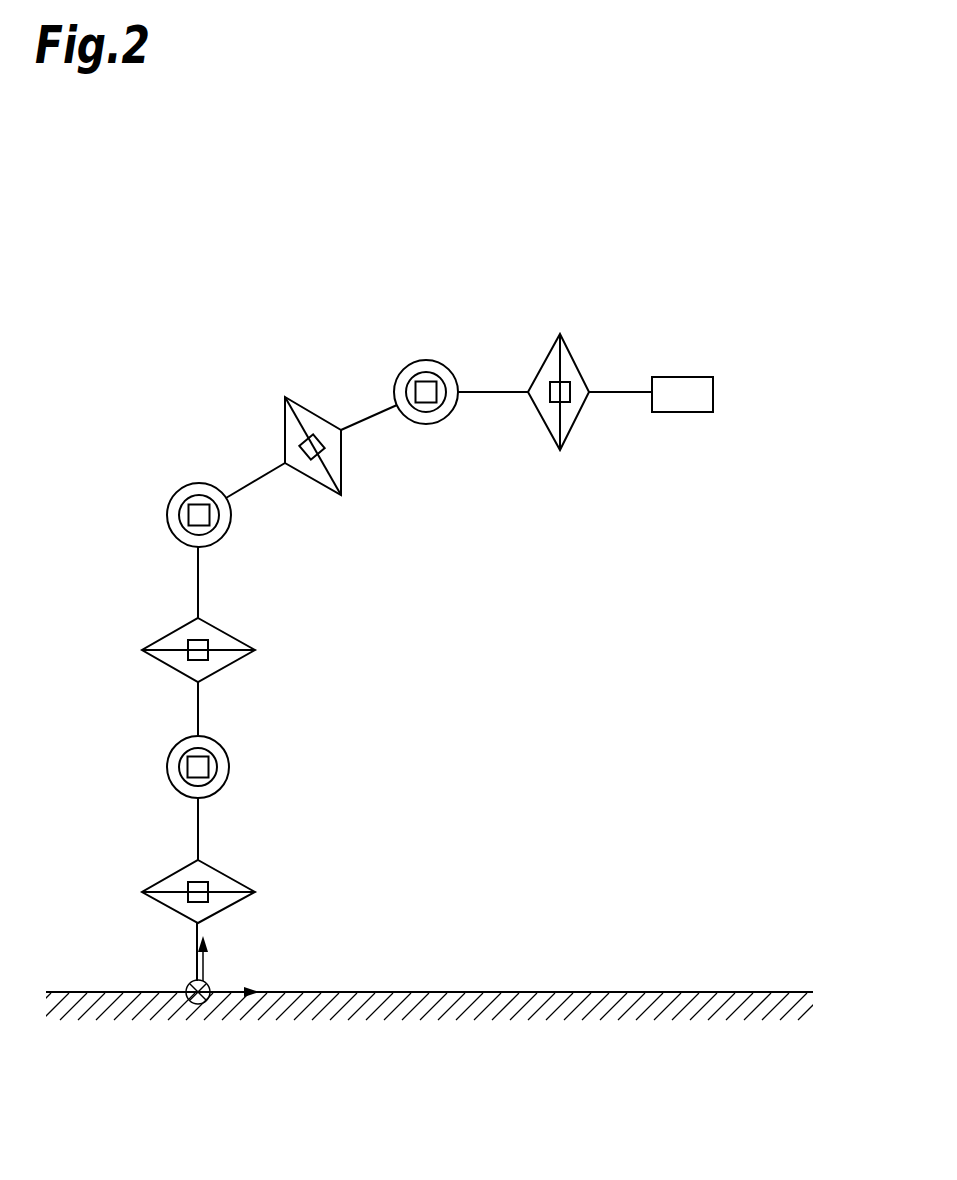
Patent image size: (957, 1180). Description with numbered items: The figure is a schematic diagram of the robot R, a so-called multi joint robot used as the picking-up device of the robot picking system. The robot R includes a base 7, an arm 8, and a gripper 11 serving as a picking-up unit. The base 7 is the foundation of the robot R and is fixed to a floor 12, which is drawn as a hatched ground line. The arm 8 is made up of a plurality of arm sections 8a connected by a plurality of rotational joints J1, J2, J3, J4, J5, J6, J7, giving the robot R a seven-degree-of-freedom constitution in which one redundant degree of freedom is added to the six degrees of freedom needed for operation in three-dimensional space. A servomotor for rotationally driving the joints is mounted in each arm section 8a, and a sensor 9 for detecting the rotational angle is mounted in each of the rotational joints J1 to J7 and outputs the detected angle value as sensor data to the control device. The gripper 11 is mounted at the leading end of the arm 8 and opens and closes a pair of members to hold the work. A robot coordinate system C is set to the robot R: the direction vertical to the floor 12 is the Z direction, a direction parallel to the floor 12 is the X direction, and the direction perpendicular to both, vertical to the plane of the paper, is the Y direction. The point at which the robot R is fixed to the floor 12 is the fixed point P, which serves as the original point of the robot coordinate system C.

The robot R is at (406, 222).
The base 7 is at (200, 935).
The arm 8 is at (378, 548).
The arm section 8a is at (255, 480).
The sensor 9 is at (200, 504).
The gripper 11 is at (684, 376).
The floor 12 is at (722, 991).
The rotational joint J1 is at (238, 901).
The rotational joint J2 is at (229, 772).
The rotational joint J3 is at (231, 528).
The rotational joint J4 is at (320, 482).
The rotational joint J5 is at (420, 424).
The rotational joint J6 is at (538, 411).
The rotational joint J7 is at (238, 659).
The fixed point P is at (200, 1005).
The robot coordinate system C is at (200, 1022).
The X direction X is at (228, 998).
The Y direction Y is at (188, 1004).
The Z direction Z is at (196, 965).